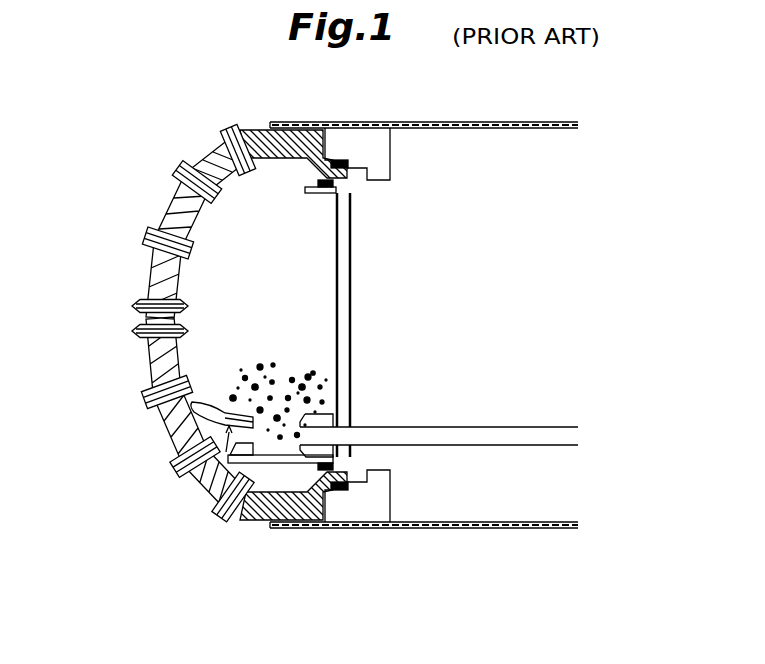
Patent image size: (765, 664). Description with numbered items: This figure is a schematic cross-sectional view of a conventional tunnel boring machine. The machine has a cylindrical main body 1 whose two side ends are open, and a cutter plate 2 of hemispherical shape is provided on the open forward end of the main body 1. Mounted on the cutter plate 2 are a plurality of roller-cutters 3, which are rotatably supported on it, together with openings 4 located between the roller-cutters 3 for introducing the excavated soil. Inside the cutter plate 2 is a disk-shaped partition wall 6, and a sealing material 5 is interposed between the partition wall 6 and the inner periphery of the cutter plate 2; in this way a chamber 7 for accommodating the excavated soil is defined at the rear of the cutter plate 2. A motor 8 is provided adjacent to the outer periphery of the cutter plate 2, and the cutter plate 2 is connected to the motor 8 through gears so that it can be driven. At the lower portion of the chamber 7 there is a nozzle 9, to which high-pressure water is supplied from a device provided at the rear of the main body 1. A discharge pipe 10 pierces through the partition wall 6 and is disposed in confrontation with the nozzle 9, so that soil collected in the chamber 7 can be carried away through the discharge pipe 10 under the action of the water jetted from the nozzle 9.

The main body 1 is at (536, 122).
The cutter plate 2 is at (147, 287).
The roller-cutters 3 is at (130, 333).
The openings 4 is at (160, 210).
The sealing material 5 is at (320, 194).
The partition wall 6 is at (346, 345).
The chamber 7 is at (238, 310).
The motor 8 is at (392, 165).
The nozzle 9 is at (193, 497).
The discharge pipe 10 is at (508, 427).